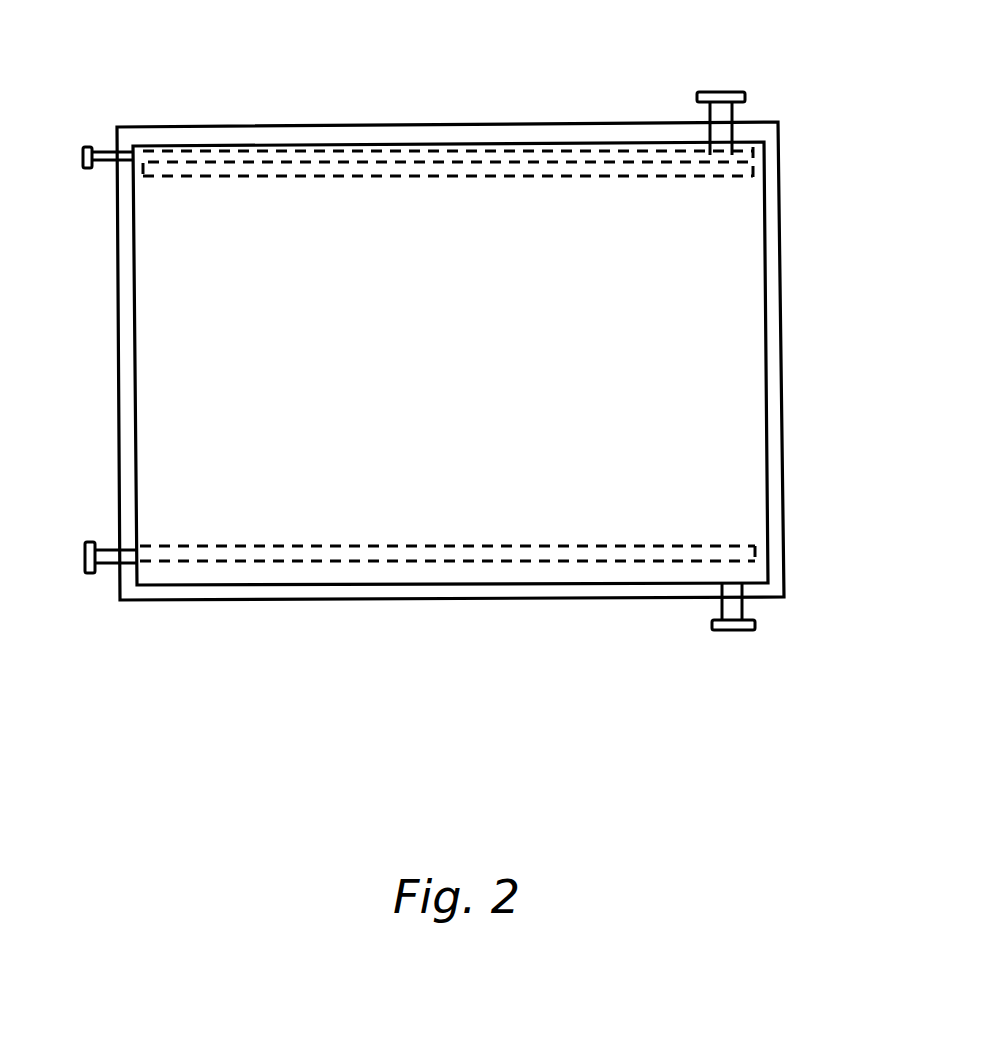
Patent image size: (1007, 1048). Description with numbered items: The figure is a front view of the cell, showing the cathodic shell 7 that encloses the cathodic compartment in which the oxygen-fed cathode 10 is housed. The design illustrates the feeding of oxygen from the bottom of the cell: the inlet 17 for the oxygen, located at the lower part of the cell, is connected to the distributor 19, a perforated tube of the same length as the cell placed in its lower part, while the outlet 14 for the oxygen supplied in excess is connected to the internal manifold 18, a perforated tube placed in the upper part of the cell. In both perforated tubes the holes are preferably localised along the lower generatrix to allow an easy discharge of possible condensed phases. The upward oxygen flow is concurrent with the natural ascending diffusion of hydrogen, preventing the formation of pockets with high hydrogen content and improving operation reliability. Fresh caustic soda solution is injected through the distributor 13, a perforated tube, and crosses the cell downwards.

The cathodic shell 7 is at (745, 285).
The oxygen-fed cathode 10 is at (730, 605).
The distributor 13 is at (102, 155).
The outlet 14 is at (723, 113).
The inlet 17 is at (112, 557).
The internal manifold 18 is at (485, 172).
The distributor 19 is at (418, 550).